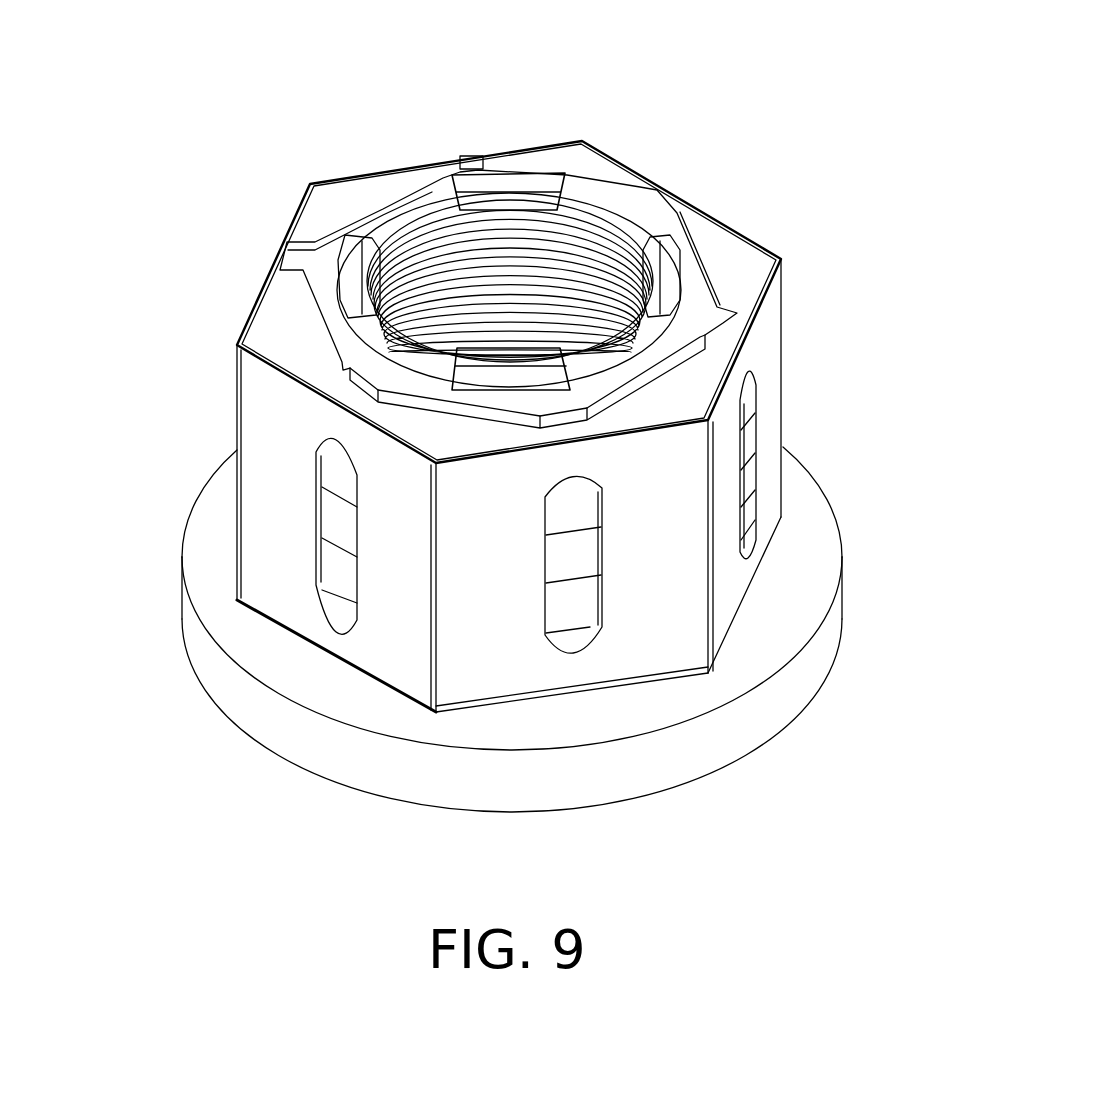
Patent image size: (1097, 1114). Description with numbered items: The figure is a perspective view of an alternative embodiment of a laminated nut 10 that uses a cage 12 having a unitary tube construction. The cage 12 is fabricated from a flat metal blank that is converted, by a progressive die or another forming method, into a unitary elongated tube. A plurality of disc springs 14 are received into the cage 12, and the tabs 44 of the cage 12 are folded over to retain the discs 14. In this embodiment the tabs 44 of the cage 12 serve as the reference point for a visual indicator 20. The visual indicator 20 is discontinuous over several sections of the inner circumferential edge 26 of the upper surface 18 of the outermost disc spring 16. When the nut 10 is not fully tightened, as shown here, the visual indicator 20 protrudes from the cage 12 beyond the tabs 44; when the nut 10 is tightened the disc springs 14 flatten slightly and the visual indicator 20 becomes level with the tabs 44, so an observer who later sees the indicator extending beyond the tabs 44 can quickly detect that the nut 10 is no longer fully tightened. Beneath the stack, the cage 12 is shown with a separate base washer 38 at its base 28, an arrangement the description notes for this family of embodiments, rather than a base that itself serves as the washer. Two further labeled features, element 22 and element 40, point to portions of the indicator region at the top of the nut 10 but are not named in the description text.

The nut 10 is at (833, 213).
The cage 12 is at (237, 360).
The disc springs 14 is at (578, 549).
The outermost disc spring 16 is at (728, 328).
The upper surface 18 is at (437, 172).
The visual indicator 20 is at (352, 320).
The left locking tab 22 is at (400, 258).
The inner circumferential edge 26 is at (629, 231).
The base 28 is at (273, 623).
The base washer 38 is at (772, 702).
The right locking tab 40 is at (668, 277).
The tabs 44 is at (586, 162).